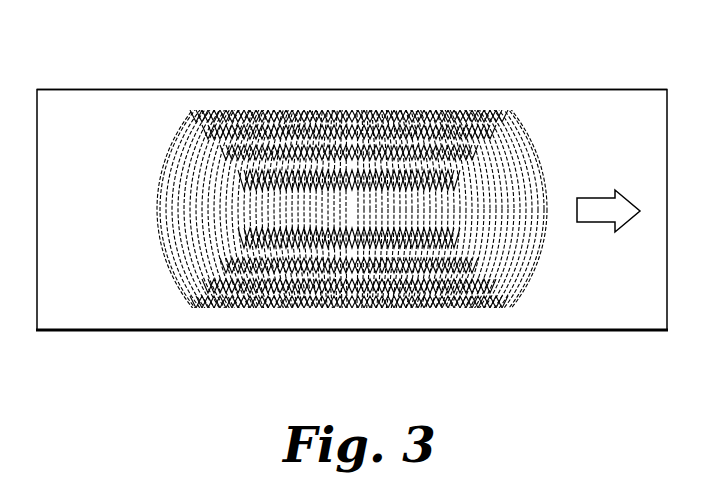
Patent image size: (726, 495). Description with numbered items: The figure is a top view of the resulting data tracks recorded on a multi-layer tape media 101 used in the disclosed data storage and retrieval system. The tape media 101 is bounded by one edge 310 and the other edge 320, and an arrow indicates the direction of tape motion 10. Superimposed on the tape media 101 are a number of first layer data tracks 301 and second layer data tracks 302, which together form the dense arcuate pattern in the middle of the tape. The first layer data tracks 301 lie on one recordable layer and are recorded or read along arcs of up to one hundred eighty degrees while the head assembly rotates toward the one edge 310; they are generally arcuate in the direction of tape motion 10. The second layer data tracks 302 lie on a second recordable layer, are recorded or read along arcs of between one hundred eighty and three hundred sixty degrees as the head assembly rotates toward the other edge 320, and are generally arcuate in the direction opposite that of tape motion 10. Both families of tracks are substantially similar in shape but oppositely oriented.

The direction of tape motion 10 is at (590, 222).
The tape media 101 is at (173, 320).
The first layer data tracks 301 is at (505, 128).
The second layer data tracks 302 is at (203, 161).
The one edge of the tape media 310 is at (358, 330).
The other edge of the tape media 320 is at (371, 90).